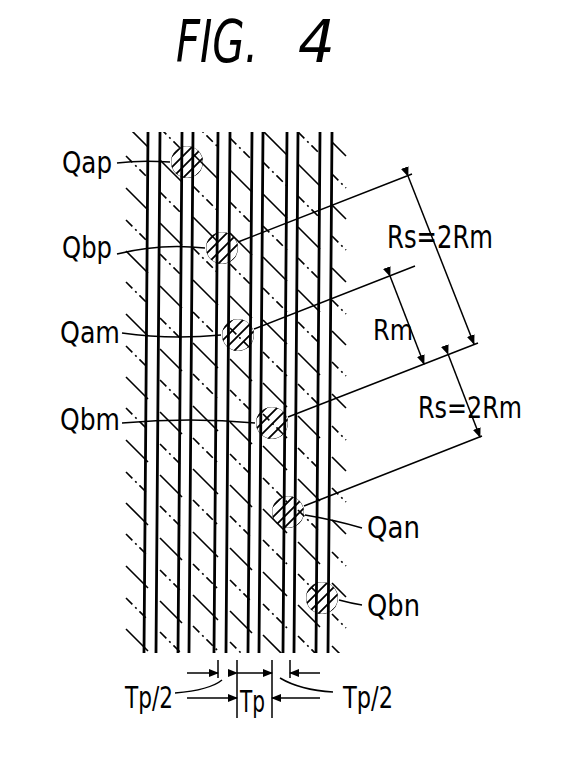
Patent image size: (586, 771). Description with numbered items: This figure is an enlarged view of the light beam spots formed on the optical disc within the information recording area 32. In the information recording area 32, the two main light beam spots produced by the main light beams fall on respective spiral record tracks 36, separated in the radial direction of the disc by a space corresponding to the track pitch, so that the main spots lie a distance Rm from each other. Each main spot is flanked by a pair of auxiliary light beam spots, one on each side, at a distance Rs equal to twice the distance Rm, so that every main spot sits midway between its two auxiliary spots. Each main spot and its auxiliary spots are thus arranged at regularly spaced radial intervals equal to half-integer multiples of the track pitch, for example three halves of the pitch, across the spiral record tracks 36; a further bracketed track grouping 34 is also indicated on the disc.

The information recording area 32 is at (118, 540).
The electrode fingers 34 is at (313, 133).
The spiral record tracks 36 is at (207, 133).